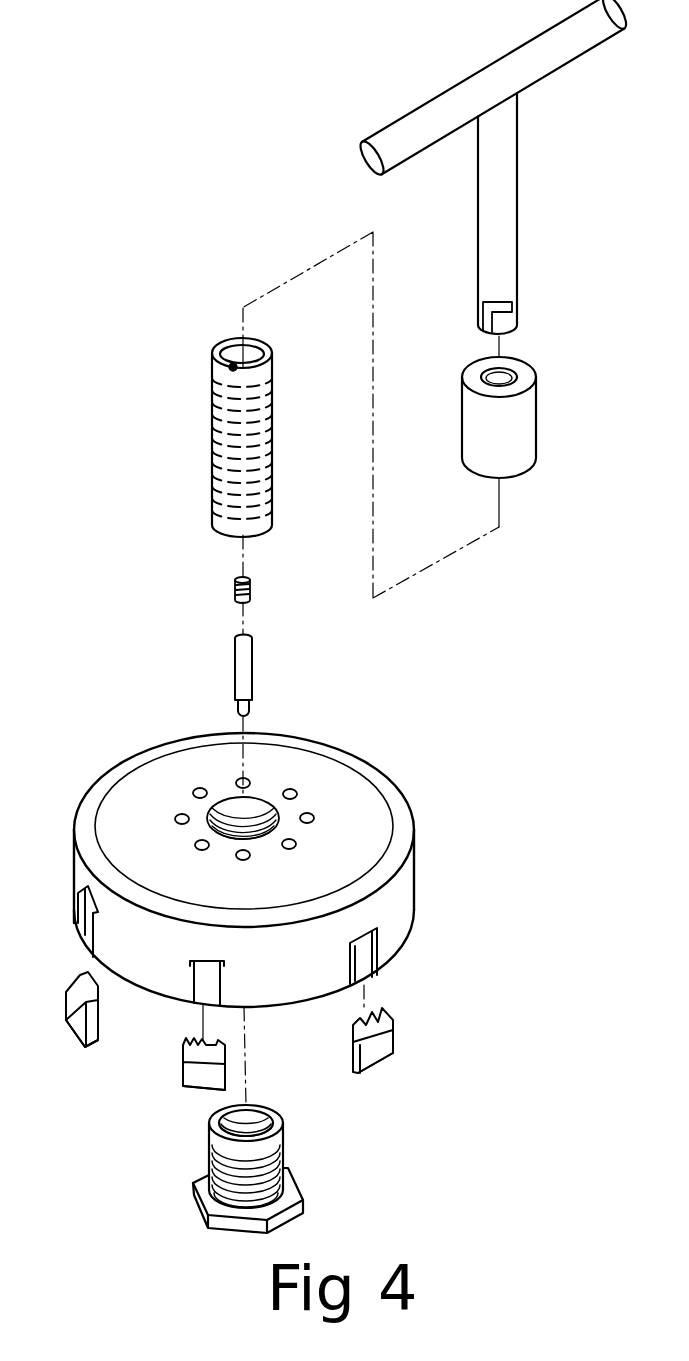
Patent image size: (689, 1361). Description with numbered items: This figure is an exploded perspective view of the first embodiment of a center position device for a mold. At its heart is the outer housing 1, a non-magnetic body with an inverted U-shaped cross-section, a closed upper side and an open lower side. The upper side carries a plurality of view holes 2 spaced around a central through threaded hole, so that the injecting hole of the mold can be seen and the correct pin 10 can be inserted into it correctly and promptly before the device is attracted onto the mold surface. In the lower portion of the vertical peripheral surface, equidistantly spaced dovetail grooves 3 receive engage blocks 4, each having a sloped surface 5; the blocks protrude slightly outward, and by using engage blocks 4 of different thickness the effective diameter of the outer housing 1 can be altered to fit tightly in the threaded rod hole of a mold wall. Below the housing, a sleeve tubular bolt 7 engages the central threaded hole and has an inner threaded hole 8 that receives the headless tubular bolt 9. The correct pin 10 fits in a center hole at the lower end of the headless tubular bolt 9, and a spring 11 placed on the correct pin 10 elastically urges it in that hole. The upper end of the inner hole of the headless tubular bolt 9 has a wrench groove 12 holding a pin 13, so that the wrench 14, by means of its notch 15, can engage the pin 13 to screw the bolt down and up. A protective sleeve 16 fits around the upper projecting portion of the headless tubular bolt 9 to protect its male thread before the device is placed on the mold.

The outer housing 1 is at (418, 885).
The view holes 2 is at (196, 790).
The dovetail grooves 3 is at (80, 928).
The engage blocks 4 is at (75, 1028).
The sloped surface 5 is at (66, 992).
The sleeve tubular bolt 7 is at (300, 1196).
The inner threaded hole 8 is at (258, 1122).
The headless tubular bolt 9 is at (265, 440).
The correct pin 10 is at (250, 678).
The spring 11 is at (252, 590).
The wrench groove 12 is at (237, 360).
The pin 13 is at (228, 364).
The wrench 14 is at (510, 190).
The notch 15 is at (479, 328).
The protective sleeve 16 is at (531, 433).